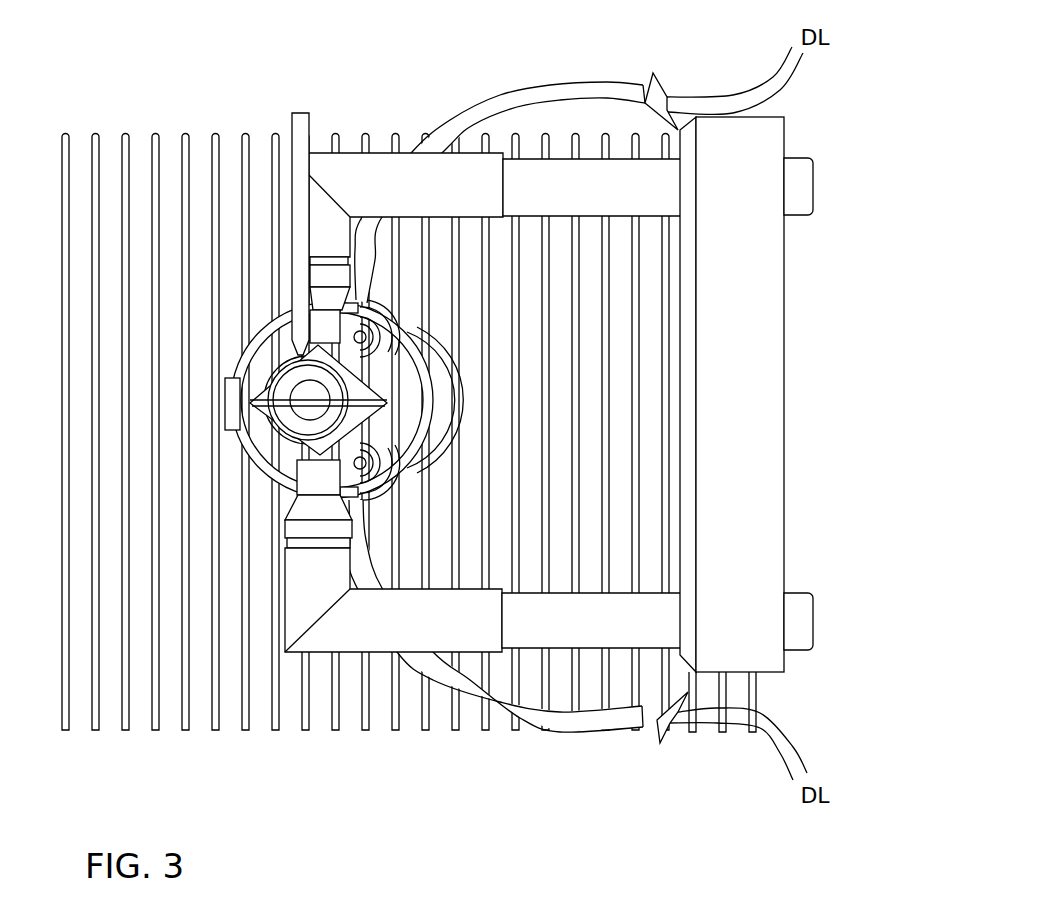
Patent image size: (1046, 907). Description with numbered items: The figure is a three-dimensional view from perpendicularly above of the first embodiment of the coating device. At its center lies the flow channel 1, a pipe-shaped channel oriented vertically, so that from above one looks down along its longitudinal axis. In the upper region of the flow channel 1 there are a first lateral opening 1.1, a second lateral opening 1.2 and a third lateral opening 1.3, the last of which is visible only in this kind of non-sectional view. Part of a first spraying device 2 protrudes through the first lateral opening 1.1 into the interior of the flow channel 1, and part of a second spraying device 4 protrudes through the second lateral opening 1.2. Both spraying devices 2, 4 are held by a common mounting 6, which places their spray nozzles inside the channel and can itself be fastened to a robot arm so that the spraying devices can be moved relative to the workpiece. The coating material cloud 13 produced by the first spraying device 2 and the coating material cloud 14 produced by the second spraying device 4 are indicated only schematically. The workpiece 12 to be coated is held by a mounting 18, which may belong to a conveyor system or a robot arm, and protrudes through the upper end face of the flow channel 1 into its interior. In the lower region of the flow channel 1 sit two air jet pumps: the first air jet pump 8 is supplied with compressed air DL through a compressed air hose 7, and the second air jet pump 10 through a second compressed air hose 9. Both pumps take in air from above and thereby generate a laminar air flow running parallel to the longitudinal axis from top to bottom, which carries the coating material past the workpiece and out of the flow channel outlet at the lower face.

The flow channel 1 is at (299, 400).
The first lateral opening 1.1 is at (284, 308).
The second lateral opening 1.2 is at (285, 500).
The third lateral opening 1.3 is at (228, 413).
The first spraying device 2 is at (422, 187).
The second spraying device 4 is at (370, 628).
The common mounting 6 is at (760, 410).
The compressed air hose 7 is at (557, 92).
The first air jet pump 8 is at (370, 333).
The second compressed air hose 9 is at (573, 723).
The second air jet pump 10 is at (373, 463).
The workpiece 12 is at (276, 358).
The coating material cloud 13 is at (367, 392).
The coating material cloud 14 is at (367, 418).
The mounting 18 is at (292, 137).